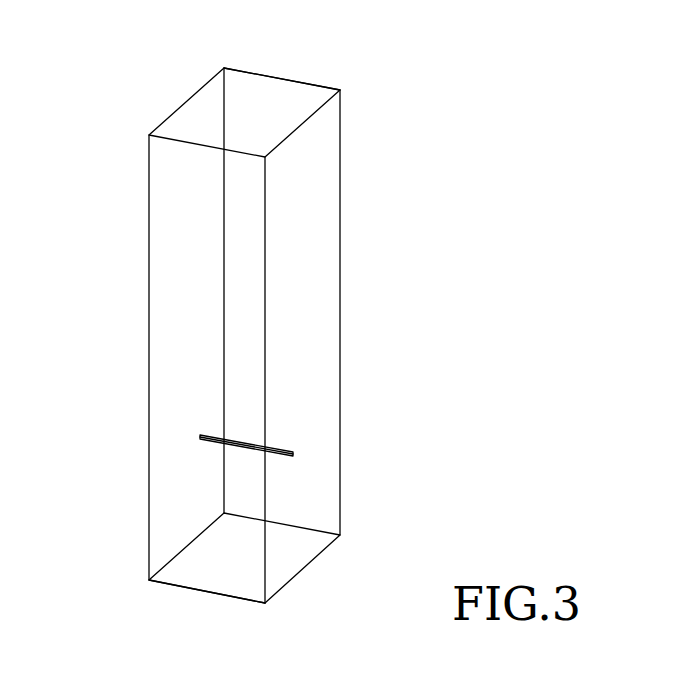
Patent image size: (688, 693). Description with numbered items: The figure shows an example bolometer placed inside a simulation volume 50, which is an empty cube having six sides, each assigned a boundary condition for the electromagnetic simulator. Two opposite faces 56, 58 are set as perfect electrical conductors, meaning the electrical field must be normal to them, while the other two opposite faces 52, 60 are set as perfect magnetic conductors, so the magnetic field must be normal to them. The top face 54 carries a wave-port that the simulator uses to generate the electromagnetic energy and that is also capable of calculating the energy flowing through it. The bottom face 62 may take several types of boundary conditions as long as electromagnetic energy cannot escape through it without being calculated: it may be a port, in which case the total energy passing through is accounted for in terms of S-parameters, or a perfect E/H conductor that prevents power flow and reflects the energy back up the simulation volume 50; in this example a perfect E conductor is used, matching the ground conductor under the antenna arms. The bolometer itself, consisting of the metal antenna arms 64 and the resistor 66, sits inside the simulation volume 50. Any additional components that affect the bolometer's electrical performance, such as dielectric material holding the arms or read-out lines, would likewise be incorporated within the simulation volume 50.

The simulation volume 50 is at (302, 318).
The face set as perfect magnetic conductor 52 is at (241, 575).
The top face 54 is at (208, 107).
The face set as perfect electrical conductor 56 is at (165, 118).
The face set as perfect electrical conductor 58 is at (318, 210).
The face set as perfect magnetic conductor 60 is at (310, 85).
The bottom face 62 is at (172, 587).
The metal antenna arms 64 is at (280, 455).
The resistor 66 is at (247, 441).